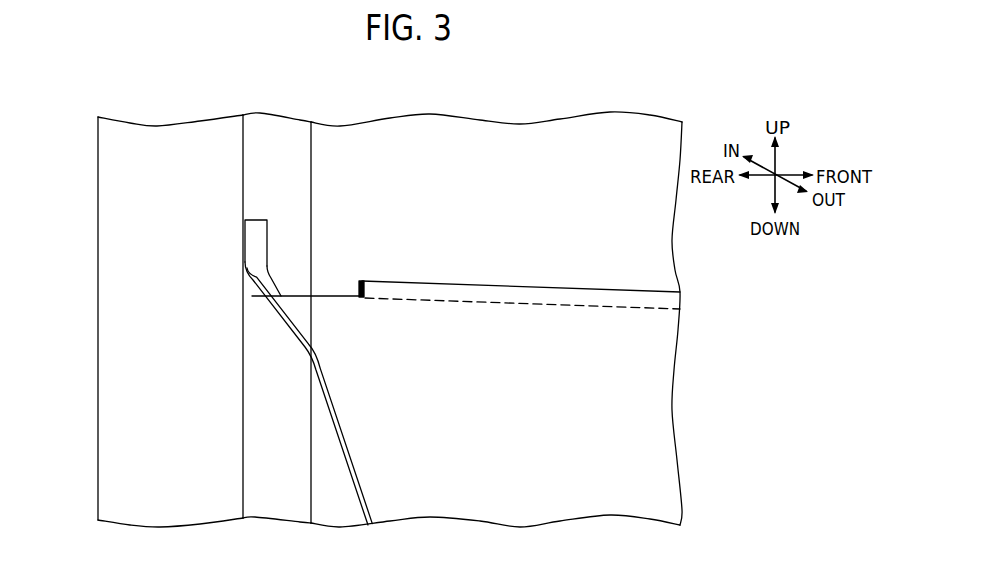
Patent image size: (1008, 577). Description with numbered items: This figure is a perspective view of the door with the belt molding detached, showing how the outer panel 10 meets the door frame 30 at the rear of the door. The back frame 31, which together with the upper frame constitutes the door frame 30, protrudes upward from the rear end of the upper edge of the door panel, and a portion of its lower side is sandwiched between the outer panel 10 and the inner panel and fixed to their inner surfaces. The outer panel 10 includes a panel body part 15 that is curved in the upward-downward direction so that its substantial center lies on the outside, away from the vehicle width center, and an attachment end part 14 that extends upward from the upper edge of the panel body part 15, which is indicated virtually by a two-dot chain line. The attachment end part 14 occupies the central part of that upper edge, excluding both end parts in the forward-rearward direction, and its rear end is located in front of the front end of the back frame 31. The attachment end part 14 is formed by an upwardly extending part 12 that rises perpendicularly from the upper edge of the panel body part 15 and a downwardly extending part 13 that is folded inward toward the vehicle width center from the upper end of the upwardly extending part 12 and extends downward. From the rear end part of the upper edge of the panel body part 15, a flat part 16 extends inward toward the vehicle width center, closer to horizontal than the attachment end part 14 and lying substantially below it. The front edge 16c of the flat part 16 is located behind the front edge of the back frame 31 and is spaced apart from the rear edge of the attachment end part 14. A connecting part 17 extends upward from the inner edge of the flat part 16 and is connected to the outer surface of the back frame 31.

The outer panel 10 is at (665, 410).
The upwardly extending part 12 is at (398, 290).
The downwardly extending part 13 is at (359, 280).
The attachment end part 14 is at (482, 284).
The panel body part 15 is at (282, 318).
The flat part 16 is at (252, 294).
The front edge 16c is at (283, 285).
The connecting part 17 is at (255, 218).
The door frame 30 is at (98, 214).
The back frame 31 is at (98, 251).